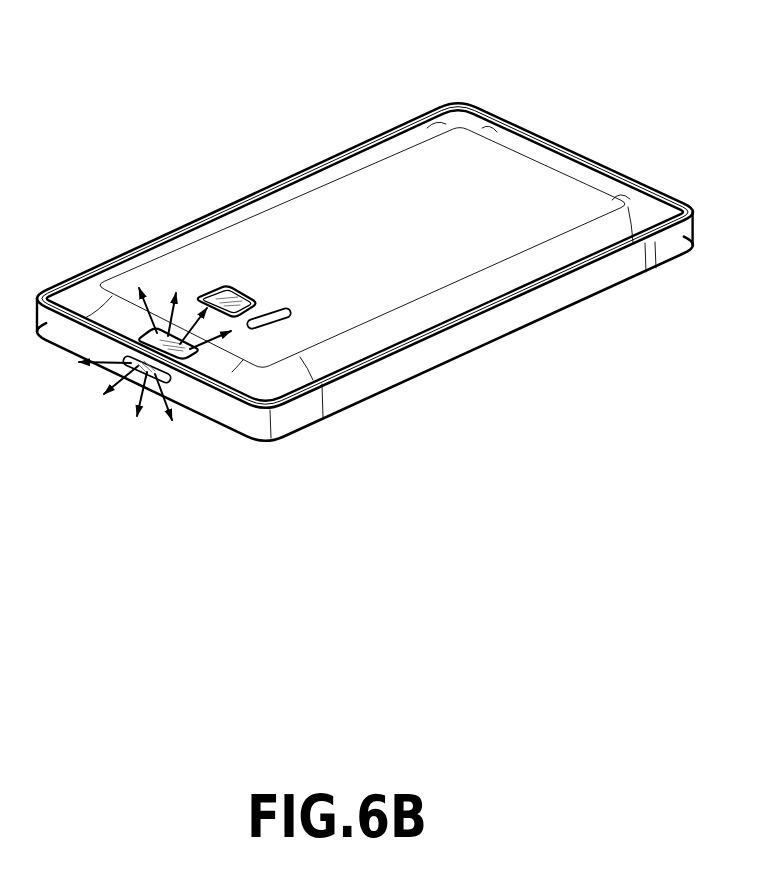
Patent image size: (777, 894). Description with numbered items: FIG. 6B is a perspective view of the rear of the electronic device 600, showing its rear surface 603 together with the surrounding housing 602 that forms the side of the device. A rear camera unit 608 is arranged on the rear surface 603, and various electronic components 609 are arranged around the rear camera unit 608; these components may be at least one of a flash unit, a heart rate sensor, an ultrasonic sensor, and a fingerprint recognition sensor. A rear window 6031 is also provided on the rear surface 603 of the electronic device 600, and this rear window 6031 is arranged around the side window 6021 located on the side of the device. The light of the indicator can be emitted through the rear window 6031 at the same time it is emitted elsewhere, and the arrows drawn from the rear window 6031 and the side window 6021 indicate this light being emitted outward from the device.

The electronic device 600 is at (387, 89).
The side member 602 is at (253, 418).
The rear surface 603 is at (70, 290).
The rear camera unit 608 is at (223, 283).
The electronic components 609 is at (268, 313).
The side window 6021 is at (135, 368).
The rear window 6031 is at (192, 352).